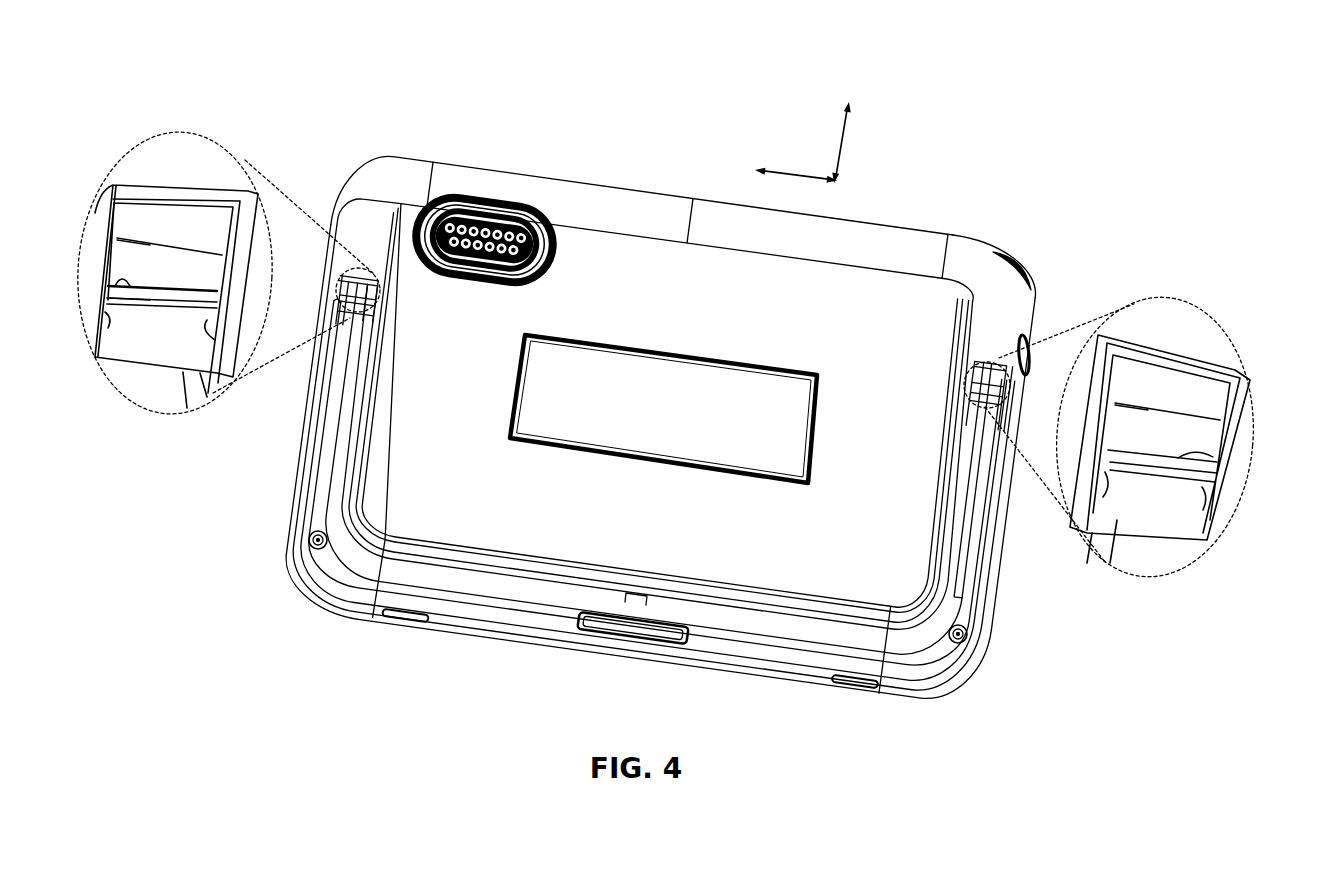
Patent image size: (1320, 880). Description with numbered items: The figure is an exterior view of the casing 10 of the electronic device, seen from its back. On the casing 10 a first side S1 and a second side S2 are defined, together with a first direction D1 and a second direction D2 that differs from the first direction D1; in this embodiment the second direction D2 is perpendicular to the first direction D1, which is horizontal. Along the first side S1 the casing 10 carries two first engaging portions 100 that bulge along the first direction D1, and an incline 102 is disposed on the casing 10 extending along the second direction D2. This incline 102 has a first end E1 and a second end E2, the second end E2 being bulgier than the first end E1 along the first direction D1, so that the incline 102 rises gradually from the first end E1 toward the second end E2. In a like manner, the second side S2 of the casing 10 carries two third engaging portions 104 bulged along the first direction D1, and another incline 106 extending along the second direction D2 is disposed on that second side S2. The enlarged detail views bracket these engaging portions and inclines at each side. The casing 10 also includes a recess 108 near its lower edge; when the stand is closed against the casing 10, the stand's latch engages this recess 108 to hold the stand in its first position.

The casing 10 is at (543, 131).
The first engaging portion 100 is at (1207, 537).
The incline 102 is at (1160, 438).
The third engaging portion 104 is at (207, 327).
The incline 106 is at (170, 273).
The recess 108 is at (630, 607).
The first end E1 is at (145, 252).
The second end E2 is at (125, 272).
The first side S1 is at (1004, 546).
The second side S2 is at (298, 470).
The first direction D1 is at (774, 169).
The second direction D2 is at (845, 130).